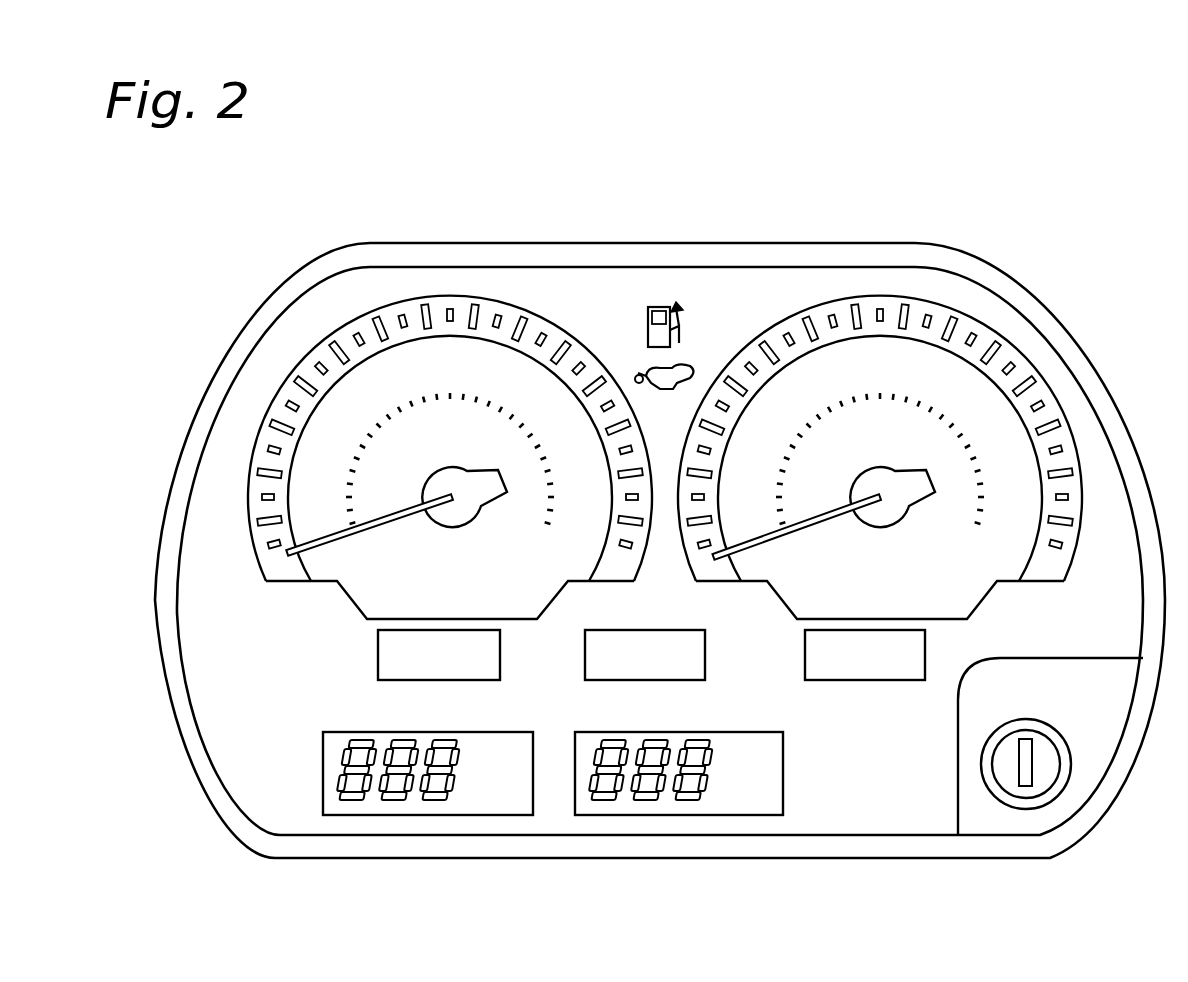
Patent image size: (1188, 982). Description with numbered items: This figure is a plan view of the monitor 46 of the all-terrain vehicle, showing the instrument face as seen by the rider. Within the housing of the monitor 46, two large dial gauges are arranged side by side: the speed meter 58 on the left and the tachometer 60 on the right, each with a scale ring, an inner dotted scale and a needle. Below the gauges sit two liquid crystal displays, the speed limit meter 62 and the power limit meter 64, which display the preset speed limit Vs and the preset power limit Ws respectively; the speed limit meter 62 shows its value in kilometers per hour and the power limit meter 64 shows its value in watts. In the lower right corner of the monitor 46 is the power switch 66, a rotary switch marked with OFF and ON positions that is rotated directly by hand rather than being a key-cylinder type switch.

The monitor 46 is at (738, 297).
The speed meter 58 is at (310, 443).
The tachometer 60 is at (1000, 452).
The speed limit meter 62 is at (447, 806).
The power limit meter 64 is at (658, 806).
The power switch 66 is at (1048, 767).